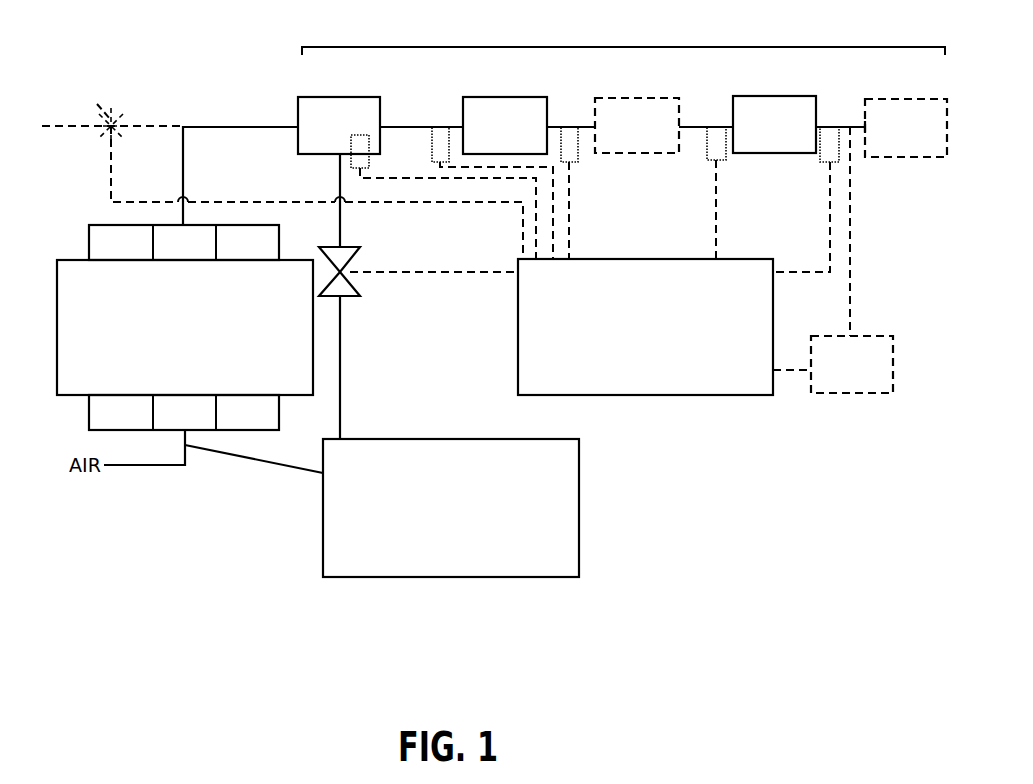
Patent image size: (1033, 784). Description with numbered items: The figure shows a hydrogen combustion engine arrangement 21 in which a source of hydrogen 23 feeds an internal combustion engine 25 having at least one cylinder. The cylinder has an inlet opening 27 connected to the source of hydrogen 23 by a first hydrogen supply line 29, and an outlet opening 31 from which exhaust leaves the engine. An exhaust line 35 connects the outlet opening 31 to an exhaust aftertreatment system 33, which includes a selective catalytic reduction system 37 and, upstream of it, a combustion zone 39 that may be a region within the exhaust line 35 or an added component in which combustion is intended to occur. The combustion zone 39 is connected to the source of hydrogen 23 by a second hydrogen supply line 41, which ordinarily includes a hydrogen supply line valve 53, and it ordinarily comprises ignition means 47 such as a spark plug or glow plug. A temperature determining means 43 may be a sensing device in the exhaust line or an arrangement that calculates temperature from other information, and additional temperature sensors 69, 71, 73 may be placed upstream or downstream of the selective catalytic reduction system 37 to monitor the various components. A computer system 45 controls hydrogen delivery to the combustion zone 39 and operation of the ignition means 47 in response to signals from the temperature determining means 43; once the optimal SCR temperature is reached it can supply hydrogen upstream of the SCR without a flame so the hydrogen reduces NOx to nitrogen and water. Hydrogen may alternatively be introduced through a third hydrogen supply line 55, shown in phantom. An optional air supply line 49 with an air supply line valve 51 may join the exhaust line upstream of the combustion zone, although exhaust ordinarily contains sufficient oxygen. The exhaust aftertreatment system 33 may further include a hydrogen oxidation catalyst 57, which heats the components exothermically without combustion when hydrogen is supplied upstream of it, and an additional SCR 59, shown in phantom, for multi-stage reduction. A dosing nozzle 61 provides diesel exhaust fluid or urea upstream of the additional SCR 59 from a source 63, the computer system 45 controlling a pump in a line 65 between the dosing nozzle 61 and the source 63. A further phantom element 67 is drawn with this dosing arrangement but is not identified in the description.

The hydrogen combustion engine arrangement 21 is at (156, 517).
The source of hydrogen 23 is at (451, 508).
The internal combustion engine 25 is at (185, 327).
The inlet opening 27 is at (87, 400).
The first hydrogen supply line 29 is at (254, 462).
The outlet opening 31 is at (89, 257).
The exhaust aftertreatment system 33 is at (623, 47).
The exhaust line 35 is at (241, 126).
The selective catalytic reduction system 37 is at (779, 153).
The combustion zone 39 is at (298, 139).
The second hydrogen supply line 41 is at (341, 405).
The temperature determining means 43 is at (710, 160).
The computer system 45 is at (645, 327).
The ignition means 47 is at (358, 170).
The air supply line 49 is at (70, 142).
The air supply line valve 51 is at (112, 100).
The hydrogen supply line valve 53 is at (352, 297).
The third hydrogen supply line 55 is at (688, 90).
The hydrogen oxidation catalyst 57 is at (475, 97).
The additional SCR 59 is at (603, 98).
The dosing nozzle 61 is at (897, 160).
The source of DEF or urea 63 is at (857, 110).
The line 65 is at (839, 394).
The DEF supply line 67 is at (858, 276).
The additional temperature sensor 69 is at (433, 127).
The additional temperature sensor 71 is at (563, 127).
The additional temperature sensor 73 is at (831, 127).